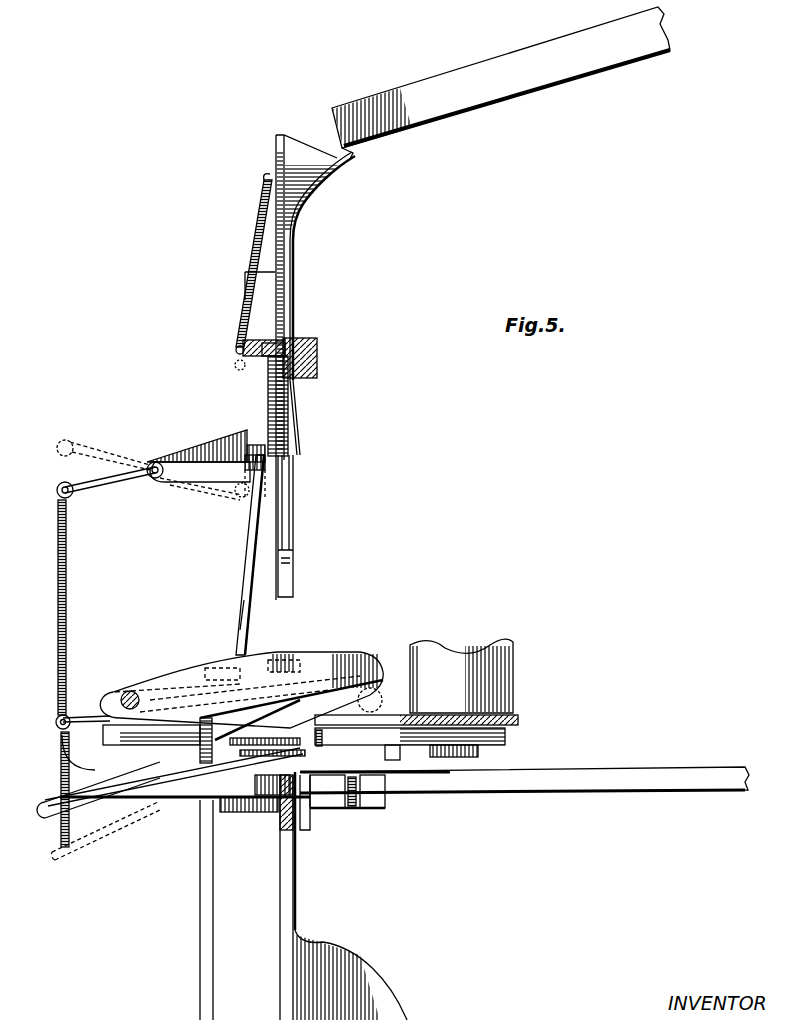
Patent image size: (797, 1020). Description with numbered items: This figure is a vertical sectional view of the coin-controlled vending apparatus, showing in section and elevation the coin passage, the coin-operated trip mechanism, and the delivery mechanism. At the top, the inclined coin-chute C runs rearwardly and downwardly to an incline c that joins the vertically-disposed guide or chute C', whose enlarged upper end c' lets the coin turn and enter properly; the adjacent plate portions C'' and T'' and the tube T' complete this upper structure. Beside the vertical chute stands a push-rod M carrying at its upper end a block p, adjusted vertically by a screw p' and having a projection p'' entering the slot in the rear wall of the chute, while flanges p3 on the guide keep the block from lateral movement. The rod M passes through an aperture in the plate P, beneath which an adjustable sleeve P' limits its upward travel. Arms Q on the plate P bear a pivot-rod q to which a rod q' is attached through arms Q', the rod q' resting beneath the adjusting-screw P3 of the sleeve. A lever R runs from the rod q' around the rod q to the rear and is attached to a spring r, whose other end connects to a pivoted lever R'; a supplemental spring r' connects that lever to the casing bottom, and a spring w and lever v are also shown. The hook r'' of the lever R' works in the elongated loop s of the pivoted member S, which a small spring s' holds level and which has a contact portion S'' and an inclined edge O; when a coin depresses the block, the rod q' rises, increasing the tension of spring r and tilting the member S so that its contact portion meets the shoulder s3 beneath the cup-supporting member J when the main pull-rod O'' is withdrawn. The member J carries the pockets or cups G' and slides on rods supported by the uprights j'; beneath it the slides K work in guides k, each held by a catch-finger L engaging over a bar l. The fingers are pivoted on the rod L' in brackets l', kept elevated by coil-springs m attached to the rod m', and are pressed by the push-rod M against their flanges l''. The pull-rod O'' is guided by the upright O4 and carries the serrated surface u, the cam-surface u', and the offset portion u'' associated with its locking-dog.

The inclined coin-chute C is at (501, 77).
The incline c is at (352, 169).
The enlarged upper end c' is at (322, 266).
The vertical plate C'' is at (303, 367).
The spring T'' is at (248, 260).
The flange p3 is at (258, 282).
The block p is at (288, 334).
The screw p' is at (224, 350).
The projection p'' is at (301, 358).
The plate P is at (275, 525).
The adjustable sleeve P' is at (272, 468).
The pivot-rod q is at (151, 454).
The arm Q is at (197, 441).
The rod q' is at (235, 439).
The arm Q' is at (200, 495).
The adjusting-screw P3 is at (240, 498).
The lever R is at (106, 469).
The spring r is at (71, 614).
The spring w is at (60, 748).
The supplemental spring r' is at (61, 760).
The push-rod M is at (236, 600).
The catch-finger L is at (241, 685).
The coil-spring m is at (153, 673).
The rod m' is at (218, 652).
The flange l'' is at (284, 650).
The pivoted lever R' is at (86, 697).
The lever v is at (255, 705).
The hook r'' is at (308, 724).
The bar l is at (358, 706).
The cup-supporting member J is at (520, 718).
The slide K is at (430, 741).
The shoulder s3 is at (455, 752).
The guide k is at (395, 746).
The pocket or cup G' is at (476, 665).
The main pull-rod O'' is at (524, 795).
The rod L' is at (139, 744).
The bracket l' is at (174, 777).
The serrated upper surface u is at (182, 744).
The cam-surface u' is at (238, 752).
The offset portion u'' is at (280, 740).
The elongated loop portion s is at (90, 811).
The pivoted member S is at (185, 809).
The inclined edge O is at (316, 817).
The spring s' is at (346, 805).
The block S'' is at (365, 804).
The upright j' is at (219, 910).
The upright O4 is at (296, 898).
The tube T' is at (303, 526).
The vertical guide or chute C' is at (311, 418).